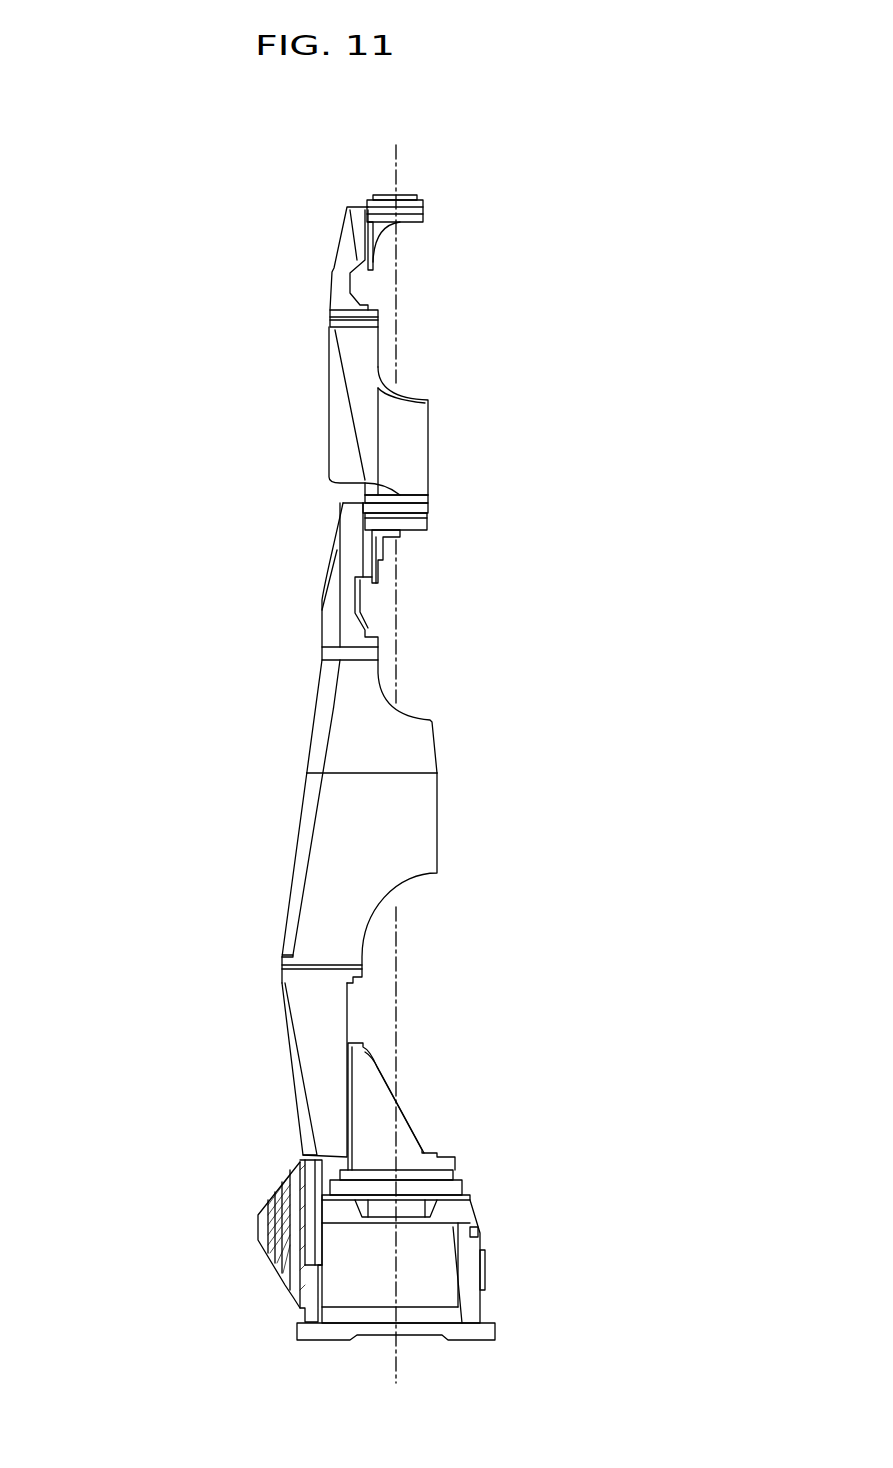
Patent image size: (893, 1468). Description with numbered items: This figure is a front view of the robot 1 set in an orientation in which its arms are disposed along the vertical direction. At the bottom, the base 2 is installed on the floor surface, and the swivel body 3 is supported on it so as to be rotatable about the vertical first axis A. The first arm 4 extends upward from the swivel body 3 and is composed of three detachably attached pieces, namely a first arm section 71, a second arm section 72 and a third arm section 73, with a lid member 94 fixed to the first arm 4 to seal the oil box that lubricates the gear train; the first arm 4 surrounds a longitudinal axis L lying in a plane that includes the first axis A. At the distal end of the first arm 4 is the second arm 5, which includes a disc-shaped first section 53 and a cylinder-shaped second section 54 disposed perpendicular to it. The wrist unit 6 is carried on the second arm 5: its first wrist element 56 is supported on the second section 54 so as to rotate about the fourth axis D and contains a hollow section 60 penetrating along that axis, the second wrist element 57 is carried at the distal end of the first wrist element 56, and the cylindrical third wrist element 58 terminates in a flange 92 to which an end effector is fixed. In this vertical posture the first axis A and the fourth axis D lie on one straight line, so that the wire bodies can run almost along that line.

The robot 1 is at (102, 193).
The base 2 is at (501, 1254).
The swivel body 3 is at (424, 1114).
The first arm 4 is at (307, 830).
The second arm 5 is at (442, 564).
The wrist unit 6 is at (423, 214).
The first section 53 is at (378, 573).
The second section 54 is at (428, 515).
The first wrist element 56 is at (370, 411).
The second wrist element 57 is at (375, 256).
The third wrist element 58 is at (423, 210).
The hollow section 60 is at (410, 394).
The first arm section 71 is at (322, 630).
The second arm section 72 is at (295, 840).
The third arm section 73 is at (282, 975).
The flange 92 is at (407, 195).
The lid member 94 is at (282, 1052).
The fourth axis D is at (396, 316).
The longitudinal axis L is at (396, 660).
The first axis A is at (397, 1368).